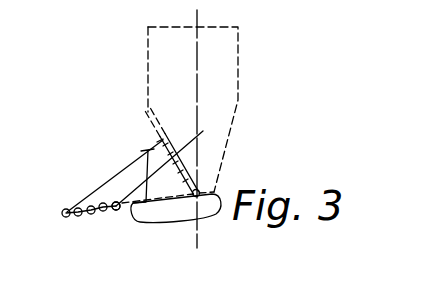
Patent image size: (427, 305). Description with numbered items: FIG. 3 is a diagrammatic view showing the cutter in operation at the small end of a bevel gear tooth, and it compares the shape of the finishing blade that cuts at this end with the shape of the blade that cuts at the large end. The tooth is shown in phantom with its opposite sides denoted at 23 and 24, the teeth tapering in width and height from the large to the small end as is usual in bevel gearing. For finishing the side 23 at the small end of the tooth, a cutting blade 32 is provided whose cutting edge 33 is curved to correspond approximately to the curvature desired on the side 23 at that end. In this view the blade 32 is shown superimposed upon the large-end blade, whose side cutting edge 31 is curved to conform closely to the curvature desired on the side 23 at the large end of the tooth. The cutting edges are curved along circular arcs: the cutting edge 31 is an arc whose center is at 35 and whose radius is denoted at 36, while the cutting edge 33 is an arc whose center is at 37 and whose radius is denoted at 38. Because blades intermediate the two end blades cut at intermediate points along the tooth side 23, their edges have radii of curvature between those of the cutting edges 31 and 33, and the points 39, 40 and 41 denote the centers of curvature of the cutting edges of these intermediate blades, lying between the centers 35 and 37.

The cutting blade 32 is at (233, 80).
The cutting edge 33 is at (184, 153).
The side cutting edge 31 is at (161, 143).
The radius 36 is at (115, 175).
The side of gear tooth 23 is at (148, 176).
The opposite side of gear tooth 24 is at (142, 151).
The radius 38 is at (149, 183).
The center of curvature 35 is at (64, 217).
The center of curvature 39 is at (78, 216).
The center of curvature 40 is at (91, 214).
The center of curvature 41 is at (114, 203).
The center of curvature 37 is at (116, 210).